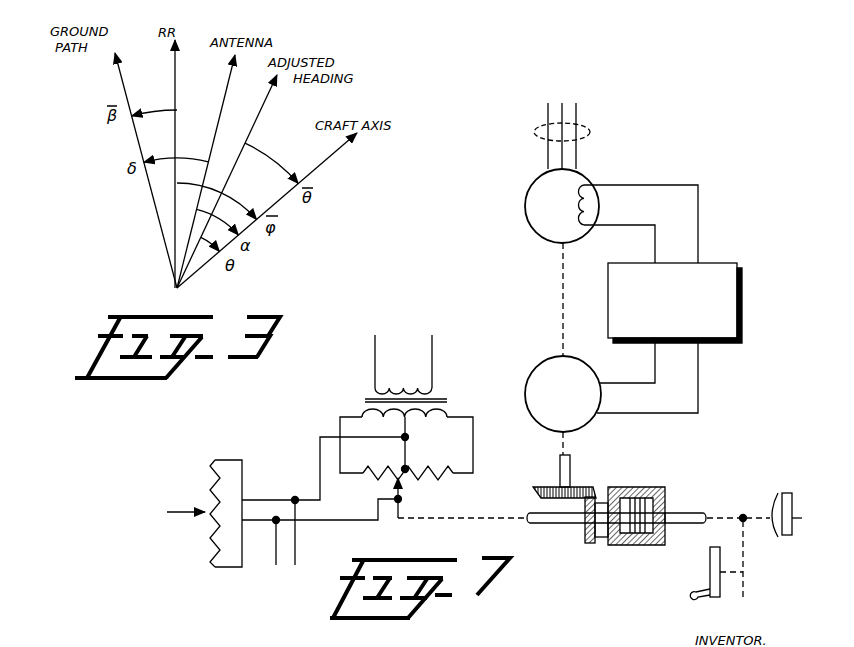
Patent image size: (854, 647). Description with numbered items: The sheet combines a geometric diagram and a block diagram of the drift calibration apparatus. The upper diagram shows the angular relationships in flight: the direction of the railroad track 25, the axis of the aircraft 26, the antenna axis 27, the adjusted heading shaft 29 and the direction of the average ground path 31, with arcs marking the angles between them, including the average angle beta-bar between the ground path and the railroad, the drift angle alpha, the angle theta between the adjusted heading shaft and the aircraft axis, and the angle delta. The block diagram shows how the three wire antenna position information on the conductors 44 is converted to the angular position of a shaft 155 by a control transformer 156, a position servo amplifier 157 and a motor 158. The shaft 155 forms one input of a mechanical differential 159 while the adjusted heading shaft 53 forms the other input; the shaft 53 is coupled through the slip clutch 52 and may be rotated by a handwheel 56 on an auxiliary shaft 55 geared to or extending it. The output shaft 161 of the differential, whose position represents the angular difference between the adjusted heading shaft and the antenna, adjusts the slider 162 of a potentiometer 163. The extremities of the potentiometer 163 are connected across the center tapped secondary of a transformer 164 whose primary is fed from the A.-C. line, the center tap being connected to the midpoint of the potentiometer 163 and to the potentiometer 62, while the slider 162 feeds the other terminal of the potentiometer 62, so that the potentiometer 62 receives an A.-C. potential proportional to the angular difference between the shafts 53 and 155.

In FIG. 3, the direction of the railroad track 25 is at (175, 70).
In FIG. 3, the axis of the aircraft 26 is at (341, 149).
In FIG. 3, the antenna axis 27 is at (230, 75).
In FIG. 3, the adjusted heading shaft 29 is at (271, 90).
In FIG. 3, the average ground path 31 is at (123, 88).
In FIG. 7, the conductors 44 is at (591, 130).
In FIG. 7, the slip clutch 52 is at (783, 493).
In FIG. 7, the shaft 53 is at (687, 511).
In FIG. 7, the auxiliary shaft 55 is at (754, 562).
In FIG. 7, the handwheel 56 is at (710, 556).
In FIG. 7, the potentiometer 62 is at (210, 486).
In FIG. 7, the shaft 155 is at (571, 470).
In FIG. 7, the control transformer 156 is at (524, 206).
In FIG. 7, the position servo amplifier 157 is at (740, 290).
In FIG. 7, the motor 158 is at (552, 358).
In FIG. 7, the mechanical differential 159 is at (633, 487).
In FIG. 7, the output shaft 161 is at (471, 516).
In FIG. 7, the slider 162 is at (406, 488).
In FIG. 7, the potentiometer 163 is at (390, 480).
In FIG. 7, the transformer 164 is at (434, 398).